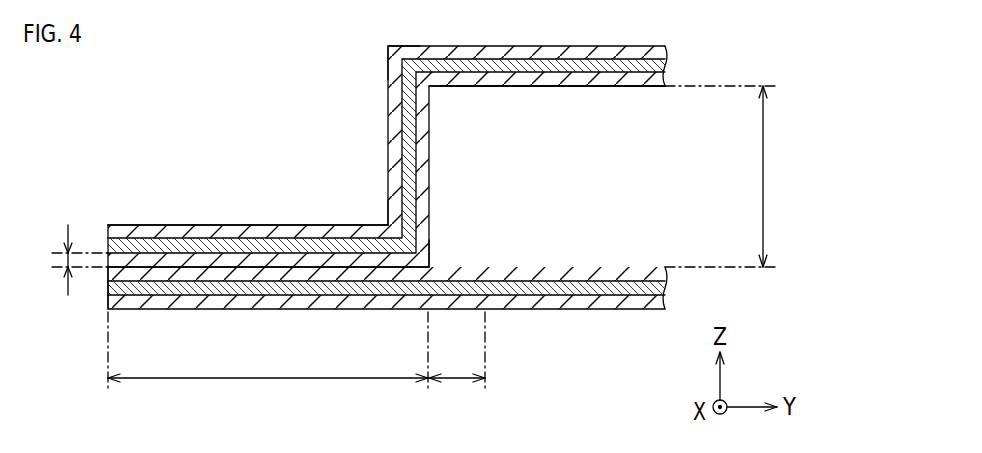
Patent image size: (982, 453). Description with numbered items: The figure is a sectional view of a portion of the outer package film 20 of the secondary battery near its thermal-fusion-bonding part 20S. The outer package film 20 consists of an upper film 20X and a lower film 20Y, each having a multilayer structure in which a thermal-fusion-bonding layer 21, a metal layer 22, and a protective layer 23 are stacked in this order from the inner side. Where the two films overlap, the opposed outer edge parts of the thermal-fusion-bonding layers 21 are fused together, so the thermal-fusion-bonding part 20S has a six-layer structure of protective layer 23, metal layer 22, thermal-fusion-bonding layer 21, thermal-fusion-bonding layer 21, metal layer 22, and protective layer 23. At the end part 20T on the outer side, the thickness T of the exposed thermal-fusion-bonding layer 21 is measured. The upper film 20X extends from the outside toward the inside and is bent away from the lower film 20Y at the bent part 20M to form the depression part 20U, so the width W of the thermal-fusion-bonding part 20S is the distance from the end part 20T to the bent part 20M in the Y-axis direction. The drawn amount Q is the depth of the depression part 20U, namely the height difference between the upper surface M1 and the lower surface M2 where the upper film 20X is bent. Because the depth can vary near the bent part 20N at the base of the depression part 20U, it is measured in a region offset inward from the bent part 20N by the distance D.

The outer package film 20 is at (400, 226).
The bent part 20N is at (381, 51).
The thermal-fusion-bonding part 20S is at (164, 203).
The end part 20T is at (107, 241).
The depression part 20U is at (630, 118).
The bent part 20M is at (441, 253).
The upper film 20X is at (360, 134).
The lower film 20Y is at (668, 177).
The thermal-fusion-bonding layer 21 is at (220, 262).
The metal layer 22 is at (277, 247).
The protective layer 23 is at (334, 232).
The upper surface M1 is at (371, 270).
The lower surface M2 is at (463, 92).
The width W is at (270, 380).
The distance D is at (456, 380).
The thickness T is at (60, 260).
The drawn amount Q is at (765, 176).